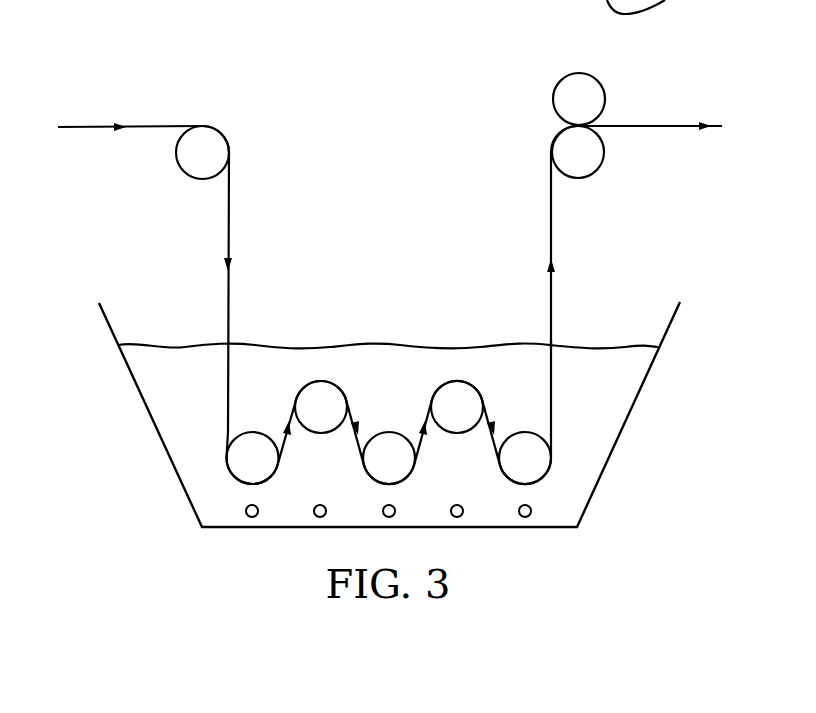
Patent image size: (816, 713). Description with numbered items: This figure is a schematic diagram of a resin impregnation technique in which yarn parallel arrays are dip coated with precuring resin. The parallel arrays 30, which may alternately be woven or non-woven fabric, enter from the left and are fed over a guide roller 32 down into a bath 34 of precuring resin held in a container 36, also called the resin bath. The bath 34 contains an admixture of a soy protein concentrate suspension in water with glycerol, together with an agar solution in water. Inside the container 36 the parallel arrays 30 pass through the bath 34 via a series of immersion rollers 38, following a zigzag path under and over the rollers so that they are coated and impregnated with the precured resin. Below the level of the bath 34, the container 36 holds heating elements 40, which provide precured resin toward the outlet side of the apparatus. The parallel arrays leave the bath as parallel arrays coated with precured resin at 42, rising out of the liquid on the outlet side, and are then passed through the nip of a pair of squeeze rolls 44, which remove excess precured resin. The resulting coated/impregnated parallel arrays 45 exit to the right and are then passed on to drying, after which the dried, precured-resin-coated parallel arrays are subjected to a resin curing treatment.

The parallel arrays 30 is at (105, 125).
The guide roller 32 is at (183, 162).
The bath 34 is at (408, 338).
The container 36 is at (625, 425).
The immersion rollers 38 is at (253, 432).
The heating elements 40 is at (250, 517).
The parallel arrays coated with precured resin 42 is at (553, 340).
The squeeze rolls 44 is at (557, 95).
The coated/impregnated parallel arrays 45 is at (678, 124).